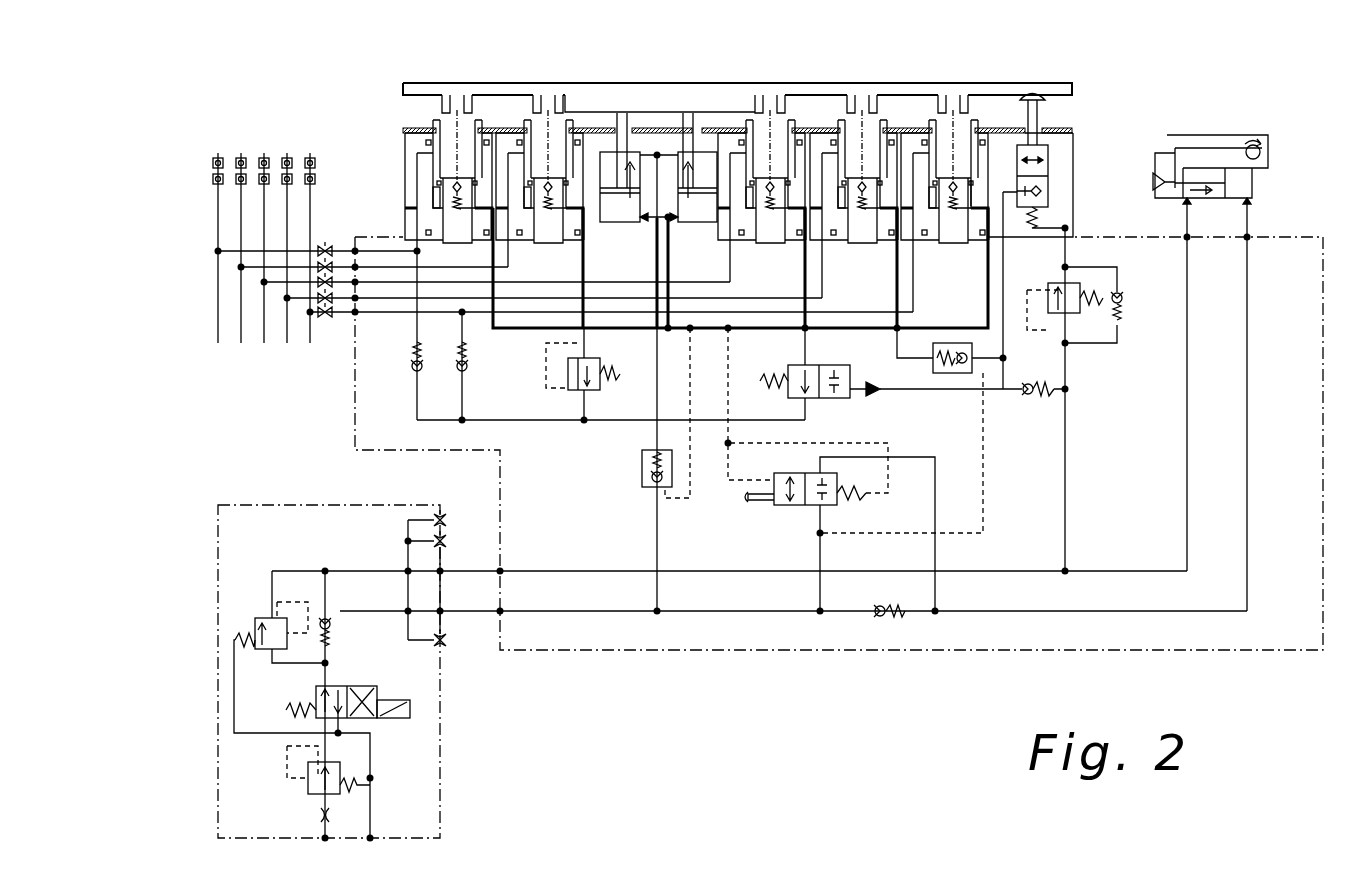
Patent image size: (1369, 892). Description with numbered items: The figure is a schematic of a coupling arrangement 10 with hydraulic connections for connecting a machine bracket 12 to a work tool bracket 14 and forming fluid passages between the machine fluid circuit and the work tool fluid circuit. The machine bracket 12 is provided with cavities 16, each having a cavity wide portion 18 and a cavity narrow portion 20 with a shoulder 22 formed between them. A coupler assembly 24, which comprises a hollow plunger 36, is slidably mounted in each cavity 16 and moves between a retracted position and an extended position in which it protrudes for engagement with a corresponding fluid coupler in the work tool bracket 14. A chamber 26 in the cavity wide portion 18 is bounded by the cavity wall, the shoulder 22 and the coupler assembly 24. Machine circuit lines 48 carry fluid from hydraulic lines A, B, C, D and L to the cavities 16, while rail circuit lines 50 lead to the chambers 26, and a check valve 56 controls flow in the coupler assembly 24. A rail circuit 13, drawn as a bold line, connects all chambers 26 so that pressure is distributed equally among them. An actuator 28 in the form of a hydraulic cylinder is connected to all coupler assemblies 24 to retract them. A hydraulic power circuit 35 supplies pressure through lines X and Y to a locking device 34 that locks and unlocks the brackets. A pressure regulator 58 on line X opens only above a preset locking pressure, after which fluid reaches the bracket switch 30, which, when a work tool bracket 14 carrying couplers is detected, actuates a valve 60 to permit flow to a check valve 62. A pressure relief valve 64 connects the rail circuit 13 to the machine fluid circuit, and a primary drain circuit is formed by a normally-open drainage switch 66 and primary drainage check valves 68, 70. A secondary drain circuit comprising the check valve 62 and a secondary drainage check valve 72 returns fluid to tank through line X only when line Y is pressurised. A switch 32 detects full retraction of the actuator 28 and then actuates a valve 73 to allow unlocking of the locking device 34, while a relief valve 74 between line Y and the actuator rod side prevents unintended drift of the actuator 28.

The coupling arrangement 10 is at (291, 128).
The machine bracket 12 is at (420, 135).
The rail circuit 13 is at (990, 280).
The work tool bracket 14 is at (410, 83).
The cavity 16 is at (430, 165).
The cavity wide portion 18 is at (432, 195).
The cavity narrow portion 20 is at (433, 222).
The shoulder 22 is at (922, 200).
The coupler assembly 24 is at (575, 116).
The chamber 26 is at (1048, 190).
The actuator 28 is at (620, 128).
The bracket switch 30 is at (1050, 105).
The switch 32 is at (752, 500).
The locking device 34 is at (1258, 190).
The hydraulic power circuit 35 is at (440, 775).
The plunger 36 is at (958, 215).
The machine circuit line 48 is at (412, 138).
The rail circuit line 50 is at (480, 215).
The check valve 56 is at (457, 185).
The pressure regulator 58 is at (1080, 295).
The valve 60 is at (1050, 158).
The check valve 62 is at (955, 375).
The pressure relief valve 64 is at (600, 378).
The drainage switch 66 is at (830, 400).
The primary drainage check valve 68 is at (413, 360).
The primary drainage check valve 70 is at (470, 350).
The secondary drainage check valve 72 is at (1035, 400).
The valve 73 is at (797, 505).
The relief valve 74 is at (642, 470).